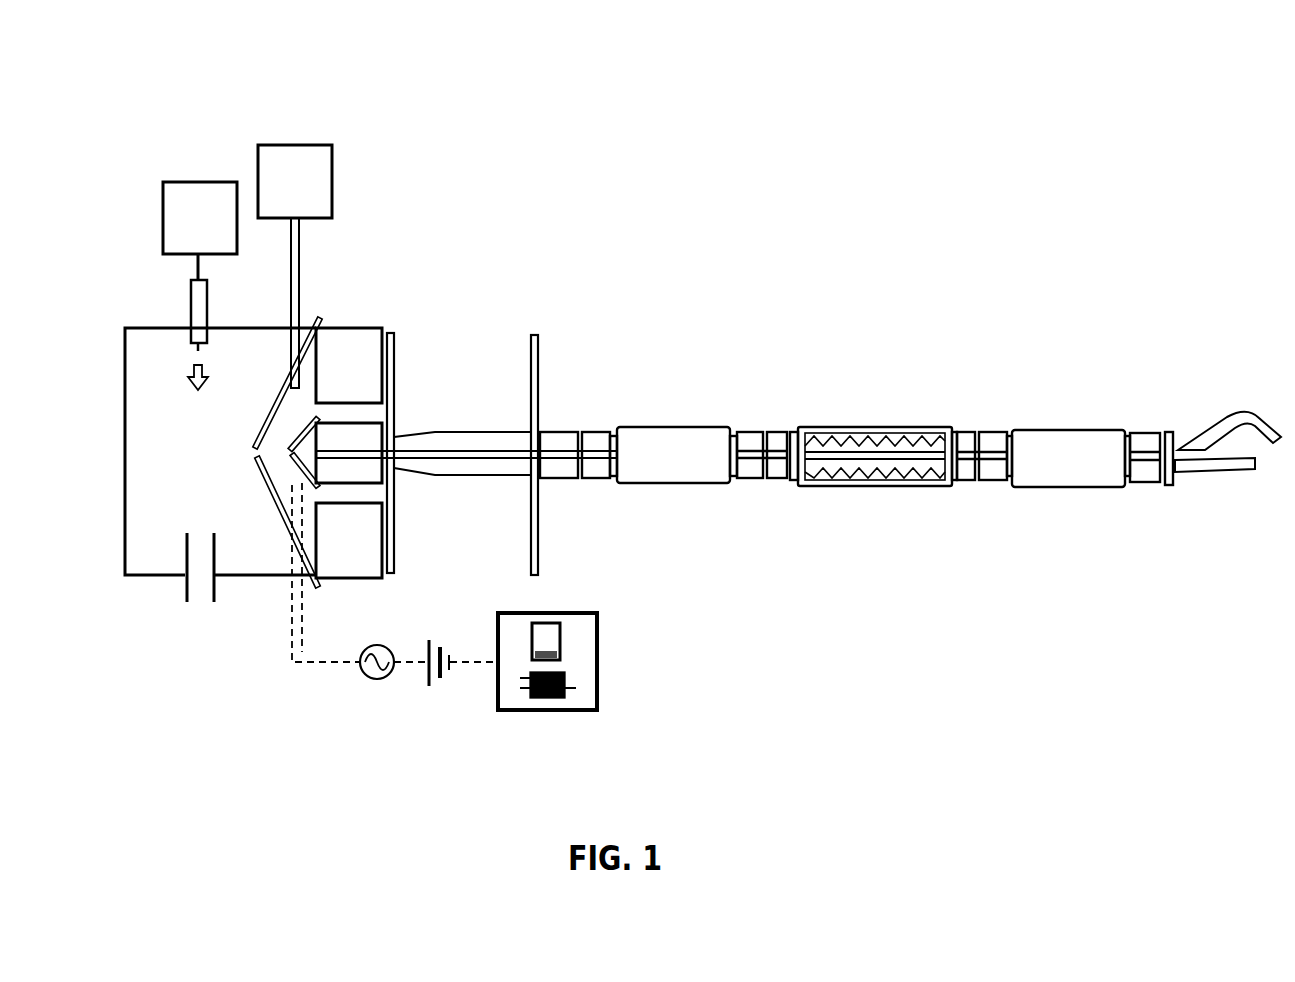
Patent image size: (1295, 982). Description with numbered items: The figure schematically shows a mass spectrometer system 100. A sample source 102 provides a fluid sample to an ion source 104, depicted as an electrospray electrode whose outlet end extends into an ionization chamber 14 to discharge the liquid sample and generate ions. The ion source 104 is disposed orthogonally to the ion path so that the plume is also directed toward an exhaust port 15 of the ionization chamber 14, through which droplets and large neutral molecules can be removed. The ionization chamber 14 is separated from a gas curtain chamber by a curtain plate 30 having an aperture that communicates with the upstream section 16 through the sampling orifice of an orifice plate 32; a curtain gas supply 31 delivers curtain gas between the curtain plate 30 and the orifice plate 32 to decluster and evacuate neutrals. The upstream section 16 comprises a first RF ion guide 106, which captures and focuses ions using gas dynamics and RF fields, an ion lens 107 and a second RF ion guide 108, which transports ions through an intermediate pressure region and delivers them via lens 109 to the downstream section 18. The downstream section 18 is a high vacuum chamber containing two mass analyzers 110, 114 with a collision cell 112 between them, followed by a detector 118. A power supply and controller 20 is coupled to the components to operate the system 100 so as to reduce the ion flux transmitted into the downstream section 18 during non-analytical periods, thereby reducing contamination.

The mass spectrometer system 100 is at (140, 152).
The sample source 102 is at (200, 218).
The ion source 104 is at (185, 307).
The ionization chamber 14 is at (173, 362).
The exhaust port 15 is at (182, 591).
The upstream section 16 is at (535, 254).
The downstream section 18 is at (1278, 258).
The power supply and controller 20 is at (597, 655).
The curtain plate 30 is at (269, 572).
The curtain gas supply 31 is at (292, 297).
The orifice plate 32 is at (285, 524).
The first RF ion guide 106 is at (356, 420).
The ion lens IQ0 107 is at (400, 333).
The second RF ion guide 108 is at (480, 410).
The IQ1 lens 109 is at (536, 335).
The mass analyzer 110 is at (677, 415).
The collision cell 112 is at (884, 415).
The mass analyzer 114 is at (1077, 412).
The detector 118 is at (1243, 392).